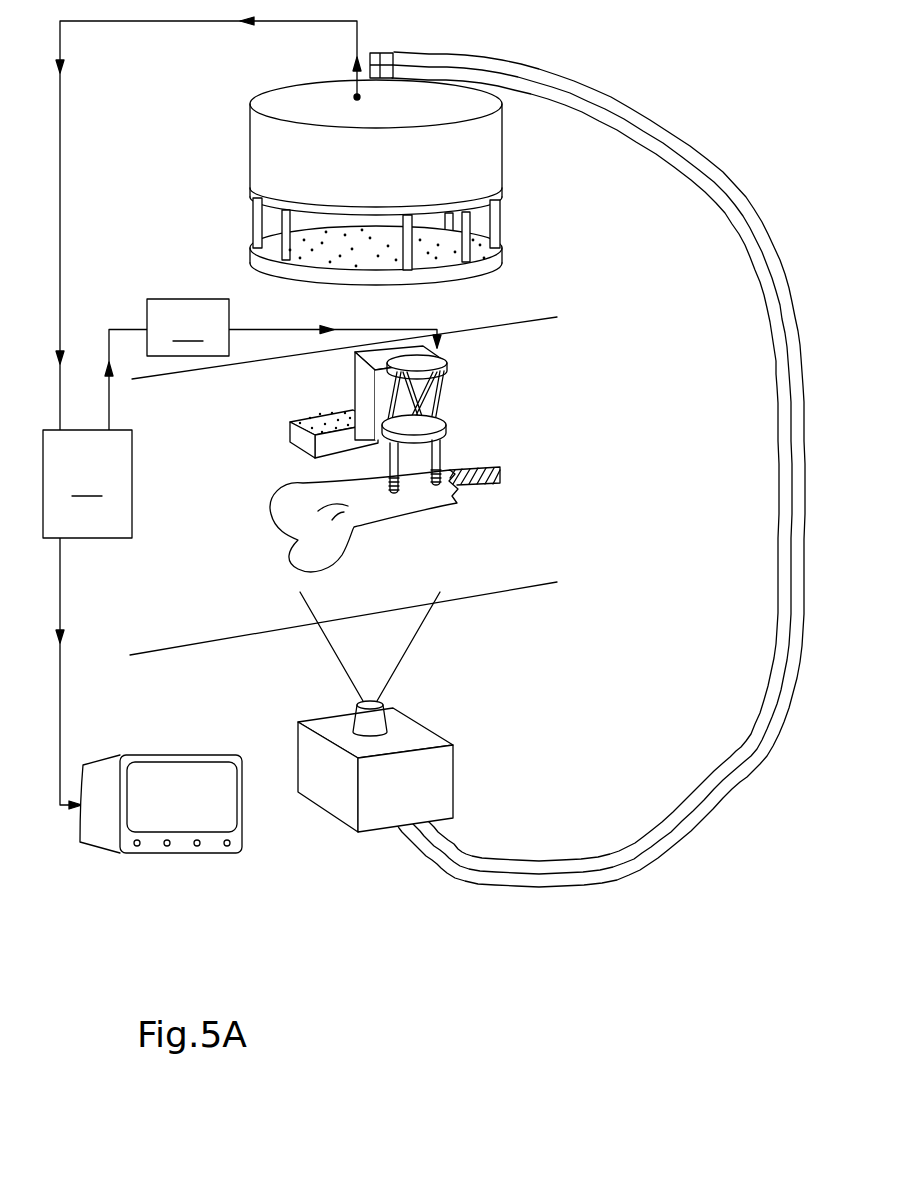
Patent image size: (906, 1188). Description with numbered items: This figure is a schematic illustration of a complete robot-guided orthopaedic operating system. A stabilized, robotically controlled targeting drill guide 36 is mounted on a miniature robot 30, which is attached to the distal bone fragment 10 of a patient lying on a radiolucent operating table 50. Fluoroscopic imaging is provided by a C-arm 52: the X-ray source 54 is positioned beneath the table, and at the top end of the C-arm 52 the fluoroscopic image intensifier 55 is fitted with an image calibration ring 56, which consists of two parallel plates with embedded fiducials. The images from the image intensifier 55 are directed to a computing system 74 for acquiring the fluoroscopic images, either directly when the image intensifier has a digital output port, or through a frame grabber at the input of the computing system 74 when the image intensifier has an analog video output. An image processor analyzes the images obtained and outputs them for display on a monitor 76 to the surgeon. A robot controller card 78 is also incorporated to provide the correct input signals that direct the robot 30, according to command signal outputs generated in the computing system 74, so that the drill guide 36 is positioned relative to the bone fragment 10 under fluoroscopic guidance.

The distal bone fragment 10 is at (398, 517).
The miniature robot 30 is at (445, 393).
The targeting drill guide 36 is at (308, 418).
The radiolucent operating table 50 is at (197, 648).
The C-arm 52 is at (722, 817).
The X-ray source 54 is at (325, 802).
The fluoroscopic image intensifier 55 is at (250, 152).
The image calibration ring 56 is at (250, 233).
The computing system 74 is at (87, 484).
The monitor 76 is at (173, 853).
The robot controller card 78 is at (188, 327).